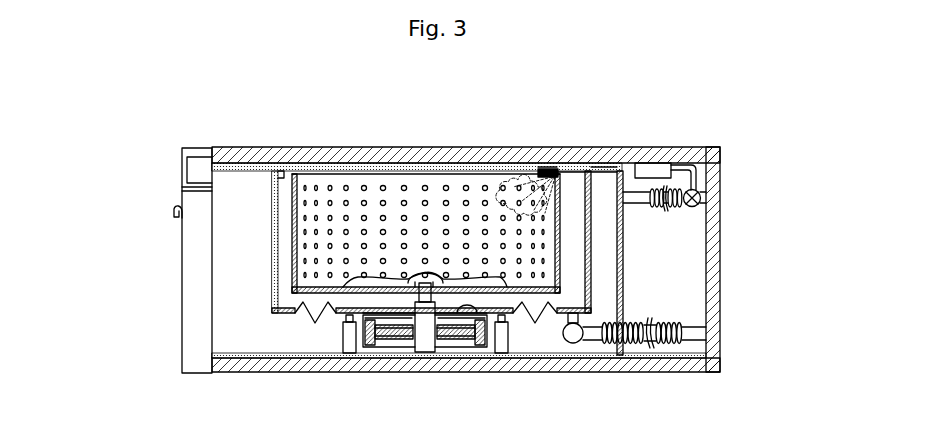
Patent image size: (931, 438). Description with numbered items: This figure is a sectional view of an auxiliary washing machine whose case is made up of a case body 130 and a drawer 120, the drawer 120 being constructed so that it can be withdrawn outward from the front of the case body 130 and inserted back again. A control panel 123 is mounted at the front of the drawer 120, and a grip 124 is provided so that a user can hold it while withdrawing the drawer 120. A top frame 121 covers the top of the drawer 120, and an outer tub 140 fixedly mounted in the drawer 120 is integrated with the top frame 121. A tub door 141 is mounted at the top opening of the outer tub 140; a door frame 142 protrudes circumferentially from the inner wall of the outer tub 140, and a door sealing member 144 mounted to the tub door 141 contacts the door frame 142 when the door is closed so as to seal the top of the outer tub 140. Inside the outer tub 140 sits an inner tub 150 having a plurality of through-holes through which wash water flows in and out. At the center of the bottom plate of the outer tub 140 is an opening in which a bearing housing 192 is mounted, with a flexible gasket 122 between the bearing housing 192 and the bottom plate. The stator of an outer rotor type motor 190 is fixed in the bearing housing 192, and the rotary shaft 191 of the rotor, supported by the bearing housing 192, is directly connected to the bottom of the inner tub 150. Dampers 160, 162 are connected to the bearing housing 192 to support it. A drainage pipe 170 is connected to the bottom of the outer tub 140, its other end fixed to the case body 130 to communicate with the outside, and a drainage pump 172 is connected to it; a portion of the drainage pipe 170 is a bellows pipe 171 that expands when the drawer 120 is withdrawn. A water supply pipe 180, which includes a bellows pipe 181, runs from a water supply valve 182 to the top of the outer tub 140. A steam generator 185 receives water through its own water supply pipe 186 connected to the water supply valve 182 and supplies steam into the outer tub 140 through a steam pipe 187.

The drawer 120 is at (420, 266).
The top frame 121 is at (235, 162).
The gasket 122 is at (287, 315).
The control panel 123 is at (185, 168).
The grip 124 is at (173, 213).
The case body 130 is at (238, 374).
The outer tub 140 is at (440, 296).
The tub door 141 is at (440, 164).
The door frame 142 is at (284, 173).
The door sealing member 144 is at (280, 171).
The inner tub 150 is at (377, 178).
The damper 160 is at (352, 348).
The damper 162 is at (502, 348).
The drainage pipe 170 is at (644, 365).
The bellows pipe 171 is at (640, 345).
The drainage pump 172 is at (570, 344).
The water supply pipe 180 is at (664, 184).
The bellows pipe 181 is at (683, 185).
The water supply valve 182 is at (690, 207).
The steam generator 185 is at (642, 163).
The water supply pipe of the steam generator 186 is at (680, 170).
The steam pipe 187 is at (607, 169).
The motor 190 is at (388, 345).
The rotary shaft 191 is at (425, 350).
The bearing housing 192 is at (466, 333).